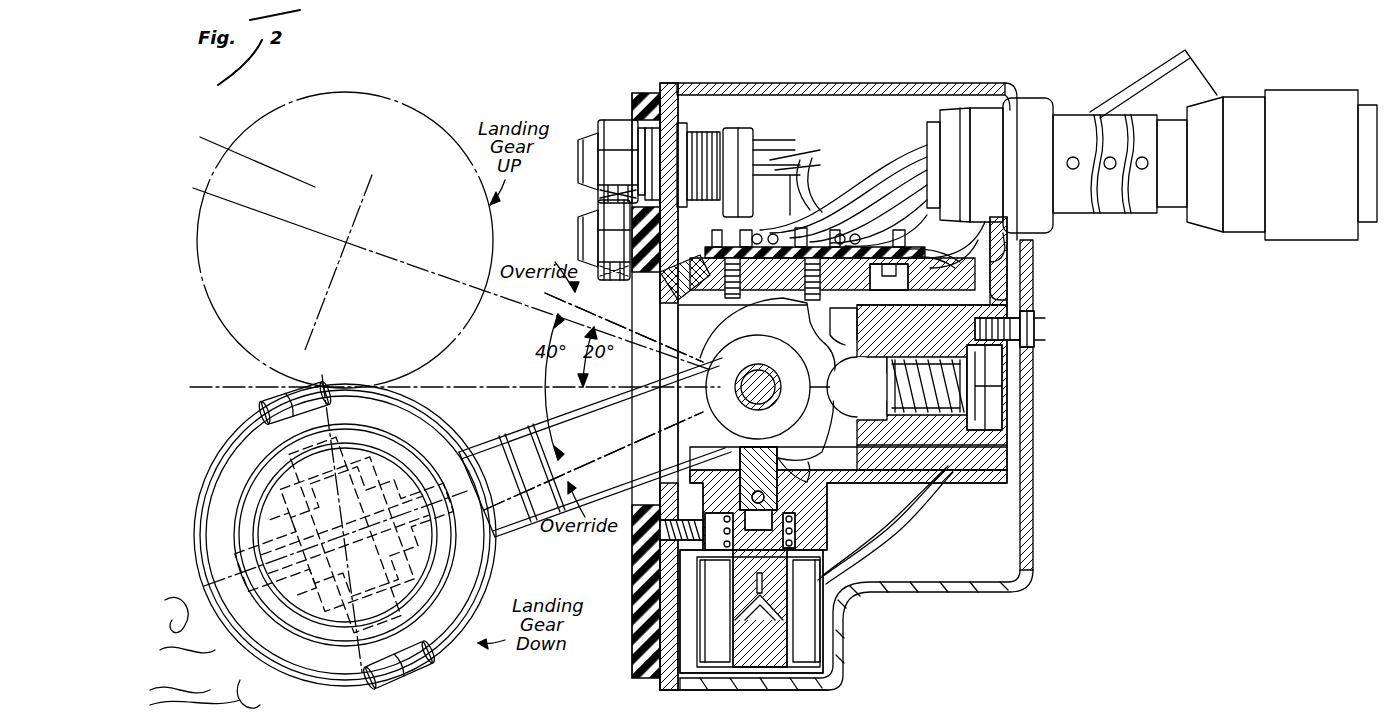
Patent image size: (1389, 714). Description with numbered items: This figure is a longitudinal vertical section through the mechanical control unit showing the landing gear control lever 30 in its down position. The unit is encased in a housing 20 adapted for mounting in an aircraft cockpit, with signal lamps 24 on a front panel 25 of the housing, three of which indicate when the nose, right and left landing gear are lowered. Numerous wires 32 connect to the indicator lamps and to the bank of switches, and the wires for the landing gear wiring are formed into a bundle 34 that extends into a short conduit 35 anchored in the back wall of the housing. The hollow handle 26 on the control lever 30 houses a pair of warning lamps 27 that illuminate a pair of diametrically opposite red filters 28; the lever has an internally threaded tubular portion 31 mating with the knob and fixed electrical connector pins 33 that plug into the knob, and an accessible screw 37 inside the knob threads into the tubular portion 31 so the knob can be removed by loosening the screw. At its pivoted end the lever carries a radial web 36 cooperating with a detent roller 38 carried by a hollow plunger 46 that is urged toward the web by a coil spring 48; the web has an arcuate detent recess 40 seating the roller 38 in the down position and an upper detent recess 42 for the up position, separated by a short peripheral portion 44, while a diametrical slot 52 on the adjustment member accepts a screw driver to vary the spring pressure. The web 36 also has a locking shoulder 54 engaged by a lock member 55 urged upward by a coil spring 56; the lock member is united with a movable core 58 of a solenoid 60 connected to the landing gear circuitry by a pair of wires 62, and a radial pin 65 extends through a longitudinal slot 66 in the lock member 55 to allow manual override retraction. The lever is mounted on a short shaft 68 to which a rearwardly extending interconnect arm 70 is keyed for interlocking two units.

The housing 20 is at (925, 85).
The signal lamps 24 is at (578, 187).
The front panel 25 is at (655, 92).
The handle 26 is at (450, 125).
The warning lamps 27 is at (338, 440).
The red filters 28 is at (326, 387).
The landing gear control lever 30 is at (522, 426).
The tubular portion 31 is at (470, 440).
The wires 32 is at (808, 162).
The electrical connector pins 33 is at (500, 450).
The bundle 34 is at (870, 165).
The conduit fitting 35 is at (1065, 112).
The radial web 36 is at (800, 329).
The screw 37 is at (338, 537).
The roller 38 is at (885, 355).
The arcuate detent recess 40 is at (830, 395).
The upper detent recess 42 is at (800, 363).
The peripheral portion 44 is at (843, 326).
The hollow plunger 46 is at (927, 357).
The coil spring 48 is at (952, 420).
The diametrical slot 52 is at (1036, 328).
The locking shoulder 54 is at (772, 462).
The lock member 55 is at (790, 497).
The coil spring 56 is at (818, 510).
The movable core 58 is at (825, 575).
The solenoid 60 is at (845, 628).
The wires 62 is at (962, 518).
The radial pin 65 is at (802, 465).
The longitudinal slot 66 is at (725, 425).
The shaft 68 is at (730, 393).
The interconnect arm 70 is at (1148, 90).